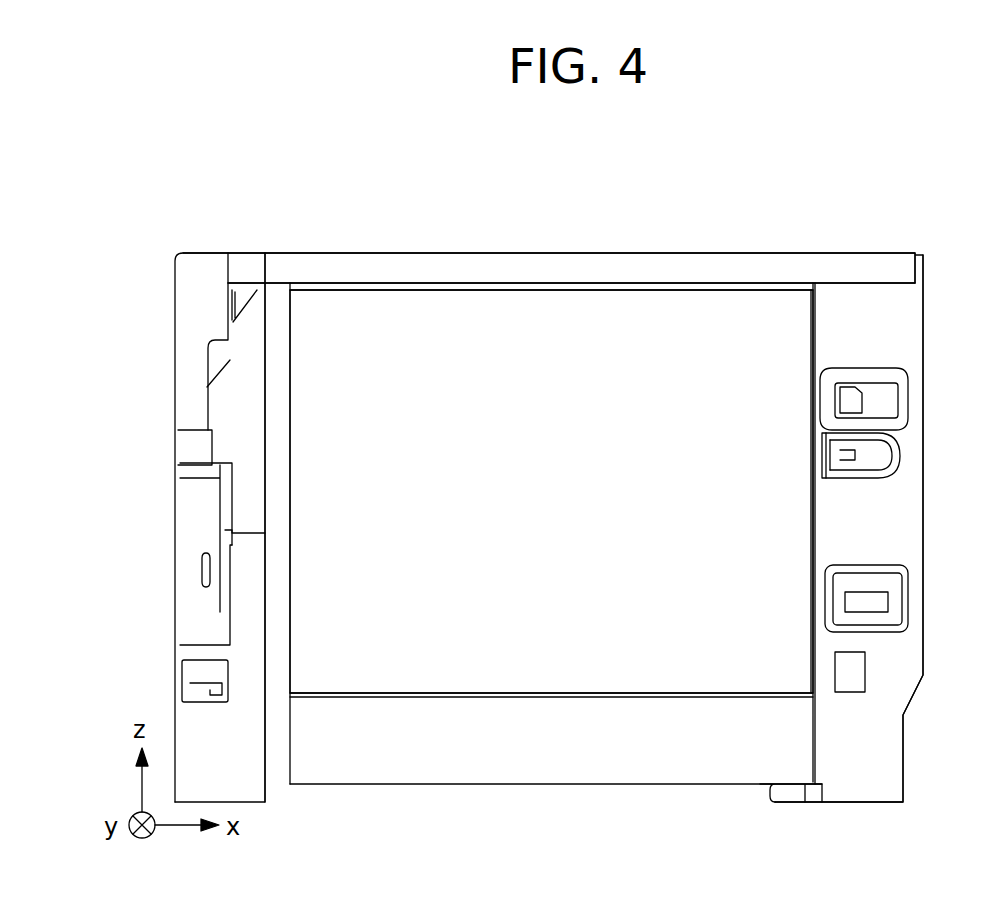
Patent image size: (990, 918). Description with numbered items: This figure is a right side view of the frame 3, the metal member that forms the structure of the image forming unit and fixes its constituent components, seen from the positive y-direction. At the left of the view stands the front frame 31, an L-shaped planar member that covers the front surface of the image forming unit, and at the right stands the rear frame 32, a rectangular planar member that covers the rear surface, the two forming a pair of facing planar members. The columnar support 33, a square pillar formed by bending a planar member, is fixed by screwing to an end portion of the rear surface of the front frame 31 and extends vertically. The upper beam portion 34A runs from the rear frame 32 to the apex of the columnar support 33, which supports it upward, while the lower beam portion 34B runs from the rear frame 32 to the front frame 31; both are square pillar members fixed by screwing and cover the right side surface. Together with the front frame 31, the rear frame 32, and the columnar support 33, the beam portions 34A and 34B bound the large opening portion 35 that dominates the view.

The frame 3 is at (243, 241).
The front frame 31 is at (183, 581).
The rear frame 32 is at (908, 338).
The columnar support 33 is at (278, 516).
The beam portion 34A is at (745, 257).
The beam portion 34B is at (518, 760).
The opening portion 35 is at (609, 634).